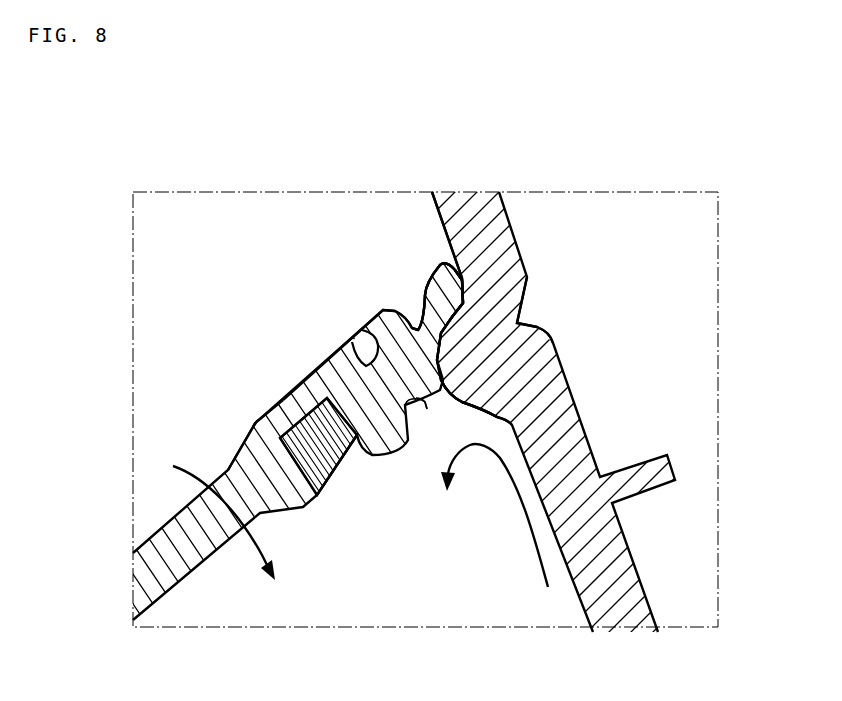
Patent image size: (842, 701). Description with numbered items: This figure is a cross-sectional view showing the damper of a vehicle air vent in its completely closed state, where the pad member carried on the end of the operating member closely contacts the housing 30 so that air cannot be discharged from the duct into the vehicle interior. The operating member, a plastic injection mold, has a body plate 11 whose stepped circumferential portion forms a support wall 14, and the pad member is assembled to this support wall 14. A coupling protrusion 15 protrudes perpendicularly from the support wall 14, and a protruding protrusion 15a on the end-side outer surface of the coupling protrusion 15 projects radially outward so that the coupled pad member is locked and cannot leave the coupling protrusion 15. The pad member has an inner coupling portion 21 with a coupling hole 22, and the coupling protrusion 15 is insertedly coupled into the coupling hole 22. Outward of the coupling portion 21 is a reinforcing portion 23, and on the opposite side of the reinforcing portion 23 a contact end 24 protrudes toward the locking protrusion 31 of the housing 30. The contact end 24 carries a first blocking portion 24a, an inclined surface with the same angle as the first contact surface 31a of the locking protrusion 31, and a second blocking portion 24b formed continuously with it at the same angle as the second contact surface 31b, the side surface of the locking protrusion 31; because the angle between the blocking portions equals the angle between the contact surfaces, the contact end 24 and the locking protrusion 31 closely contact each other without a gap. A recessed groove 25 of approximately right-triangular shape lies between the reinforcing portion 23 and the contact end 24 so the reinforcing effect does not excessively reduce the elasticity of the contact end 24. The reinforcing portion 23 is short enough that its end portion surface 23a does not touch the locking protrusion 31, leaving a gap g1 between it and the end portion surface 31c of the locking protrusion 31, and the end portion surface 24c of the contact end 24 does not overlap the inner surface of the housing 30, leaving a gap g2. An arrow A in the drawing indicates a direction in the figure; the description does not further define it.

The body plate 11 is at (180, 513).
The support wall 14 is at (287, 395).
The coupling protrusion 15 is at (405, 408).
The protruding protrusion 15a is at (427, 409).
The coupling portion 21 is at (317, 495).
The coupling hole 22 is at (343, 480).
The reinforcing portion 23 is at (380, 311).
The end portion surface 23a is at (372, 363).
The contact end 24 is at (424, 129).
The first blocking portion 24a is at (413, 308).
The second blocking portion 24b is at (436, 268).
The end portion surface 24c is at (462, 291).
The recessed groove 25 is at (411, 318).
The housing 30 is at (608, 552).
The locking protrusion 31 is at (490, 380).
The first contact surface 31a is at (455, 332).
The second contact surface 31b is at (462, 292).
The end portion surface 31c is at (565, 400).
The gap g1 is at (463, 364).
The gap g2 is at (527, 277).
The direction A is at (350, 515).